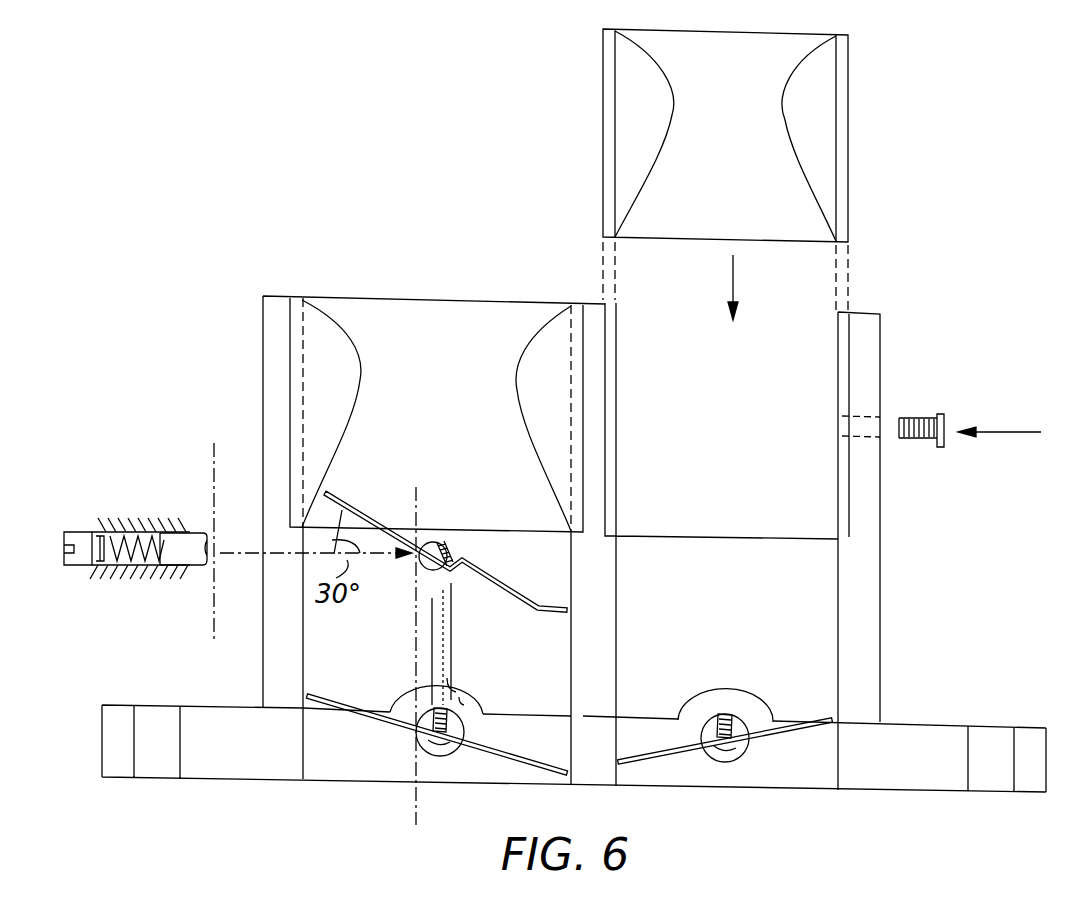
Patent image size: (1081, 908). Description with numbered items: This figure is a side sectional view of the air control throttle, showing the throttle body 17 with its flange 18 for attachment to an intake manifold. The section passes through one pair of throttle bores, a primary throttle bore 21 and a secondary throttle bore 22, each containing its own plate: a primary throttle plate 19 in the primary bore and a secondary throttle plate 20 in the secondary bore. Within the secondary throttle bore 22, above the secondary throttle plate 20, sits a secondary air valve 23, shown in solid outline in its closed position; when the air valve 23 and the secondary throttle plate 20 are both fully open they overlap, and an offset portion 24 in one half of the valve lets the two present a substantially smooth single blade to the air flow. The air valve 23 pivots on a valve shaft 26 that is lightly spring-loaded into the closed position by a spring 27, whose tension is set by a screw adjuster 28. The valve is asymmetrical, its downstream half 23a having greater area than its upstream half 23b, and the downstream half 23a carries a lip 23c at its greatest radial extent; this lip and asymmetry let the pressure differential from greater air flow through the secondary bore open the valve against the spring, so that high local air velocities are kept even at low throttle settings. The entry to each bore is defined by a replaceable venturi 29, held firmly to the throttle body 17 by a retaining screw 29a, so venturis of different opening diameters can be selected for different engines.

The throttle body 17 is at (883, 608).
The flange 18 is at (935, 736).
The primary throttle plate 19 is at (778, 736).
The secondary throttle plate 20 is at (377, 716).
The primary throttle bore 21 is at (721, 544).
The secondary throttle bore 22 is at (434, 560).
The secondary air valve 23 is at (503, 571).
The downstream half 23a is at (537, 600).
The upstream half 23b is at (375, 521).
The lip 23c is at (568, 611).
The offset portion 24 is at (462, 576).
The valve shaft 26 is at (193, 557).
The spring 27 is at (140, 530).
The screw adjuster 28 is at (83, 540).
The replaceable venturi 29 is at (458, 346).
The retaining screw 29a is at (937, 418).